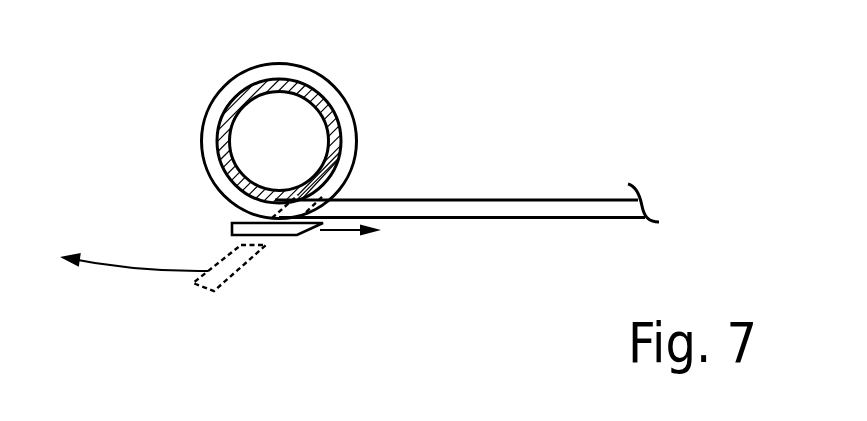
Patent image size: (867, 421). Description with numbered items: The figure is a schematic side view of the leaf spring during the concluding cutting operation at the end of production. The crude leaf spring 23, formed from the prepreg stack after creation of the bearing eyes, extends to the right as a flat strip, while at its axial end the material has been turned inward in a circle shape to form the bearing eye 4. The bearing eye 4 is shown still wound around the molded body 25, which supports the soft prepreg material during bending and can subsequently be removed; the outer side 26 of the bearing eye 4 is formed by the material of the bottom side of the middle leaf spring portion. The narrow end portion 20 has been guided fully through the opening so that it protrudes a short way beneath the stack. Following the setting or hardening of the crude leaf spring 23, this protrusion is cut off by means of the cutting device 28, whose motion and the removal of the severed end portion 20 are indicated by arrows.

The outer side 26 is at (200, 143).
The molded body 25 is at (313, 88).
The bearing eye 4 is at (355, 122).
The crude leaf spring 23 is at (498, 207).
The cutting device 28 is at (232, 229).
The narrow end portion 20 is at (237, 270).